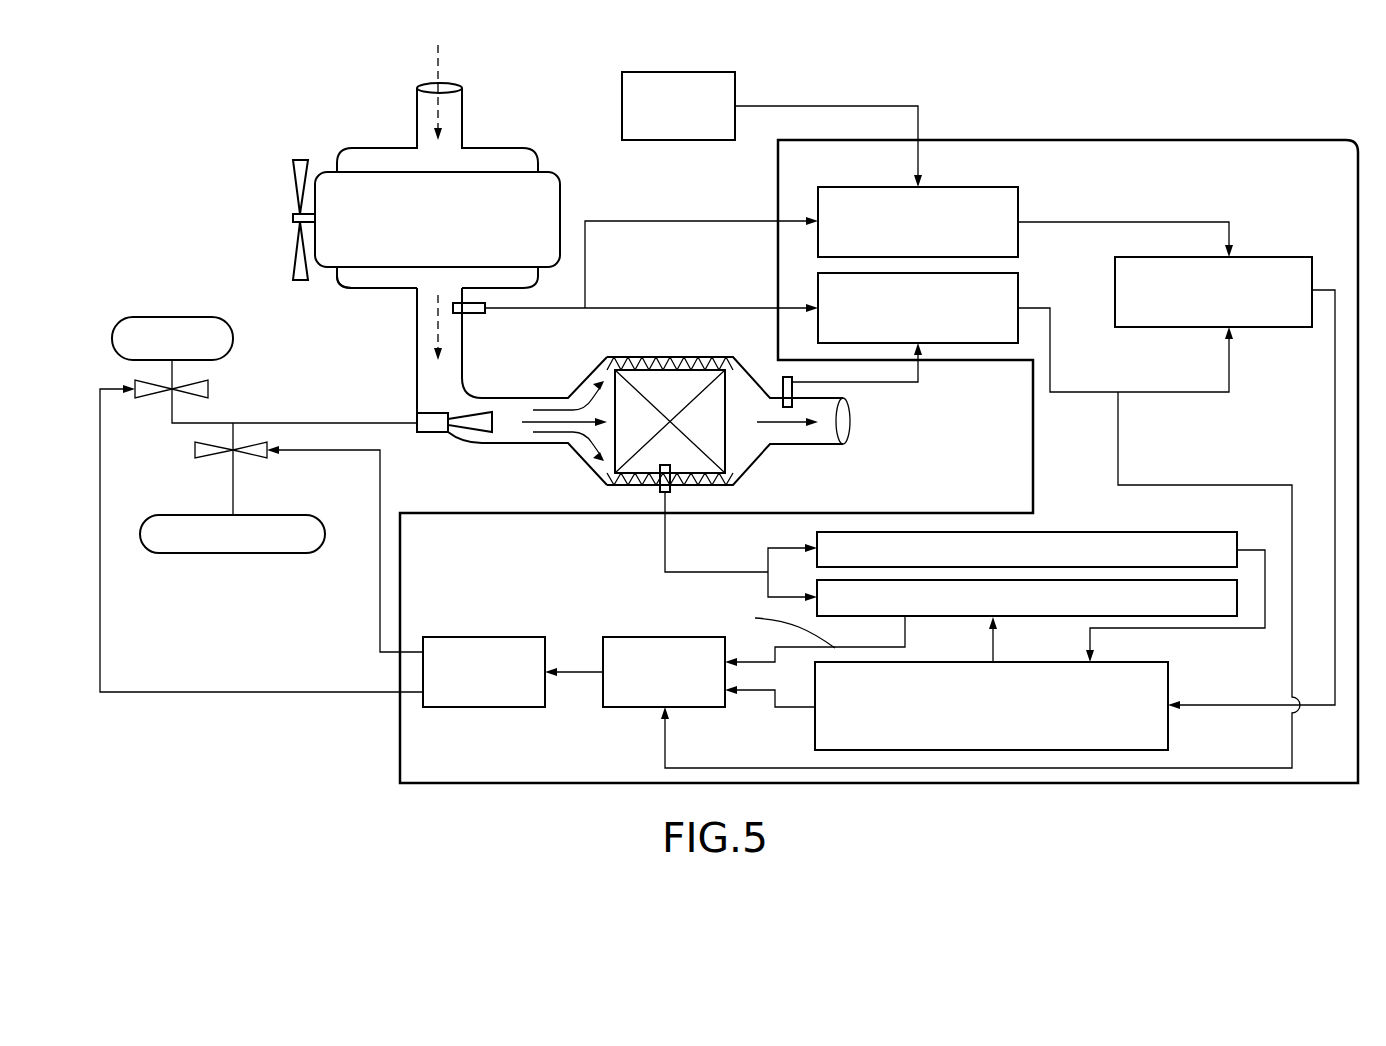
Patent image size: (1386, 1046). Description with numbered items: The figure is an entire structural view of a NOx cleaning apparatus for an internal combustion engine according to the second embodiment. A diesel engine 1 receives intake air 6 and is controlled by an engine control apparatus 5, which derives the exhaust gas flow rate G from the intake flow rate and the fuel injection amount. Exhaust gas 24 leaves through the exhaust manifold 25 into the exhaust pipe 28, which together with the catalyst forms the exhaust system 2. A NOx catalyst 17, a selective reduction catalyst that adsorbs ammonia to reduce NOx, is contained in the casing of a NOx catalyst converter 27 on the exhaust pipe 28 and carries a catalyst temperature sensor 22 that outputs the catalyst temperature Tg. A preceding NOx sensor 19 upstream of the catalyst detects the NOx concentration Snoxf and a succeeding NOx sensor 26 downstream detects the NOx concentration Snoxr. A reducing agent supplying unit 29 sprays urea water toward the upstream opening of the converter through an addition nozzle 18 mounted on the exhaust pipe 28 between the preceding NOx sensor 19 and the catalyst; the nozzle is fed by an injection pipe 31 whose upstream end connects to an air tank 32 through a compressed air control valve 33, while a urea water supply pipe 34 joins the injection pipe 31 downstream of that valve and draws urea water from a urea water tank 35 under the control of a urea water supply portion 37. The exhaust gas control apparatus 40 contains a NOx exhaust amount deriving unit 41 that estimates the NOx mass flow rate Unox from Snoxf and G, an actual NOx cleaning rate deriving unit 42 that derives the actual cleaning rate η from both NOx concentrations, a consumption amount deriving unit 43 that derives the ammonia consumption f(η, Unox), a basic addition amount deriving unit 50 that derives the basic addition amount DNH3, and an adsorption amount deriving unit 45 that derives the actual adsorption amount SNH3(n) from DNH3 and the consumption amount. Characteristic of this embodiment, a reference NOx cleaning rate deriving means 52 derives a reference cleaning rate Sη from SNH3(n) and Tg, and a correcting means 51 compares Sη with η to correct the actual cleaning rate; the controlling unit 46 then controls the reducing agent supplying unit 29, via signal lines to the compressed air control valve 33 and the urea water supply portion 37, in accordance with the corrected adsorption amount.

The diesel engine 1 is at (347, 143).
The exhaust system 2 is at (514, 385).
The engine control apparatus 5 is at (677, 140).
The intake air 6 is at (435, 62).
The NOx catalyst 17 is at (690, 380).
The addition nozzle 18 is at (444, 432).
The preceding NOx sensor 19 is at (468, 313).
The catalyst temperature sensor 22 is at (672, 486).
The exhaust gas 24 is at (435, 298).
The exhaust manifold 25 is at (362, 288).
The succeeding NOx sensor 26 is at (782, 390).
The NOx catalyst converter 27 is at (588, 358).
The exhaust pipe 28 is at (510, 443).
The reducing agent supplying unit 29 is at (362, 408).
The injection pipe 31 is at (307, 422).
The air tank 32 is at (178, 317).
The compressed air control valve 33 is at (210, 389).
The urea water supply pipe 34 is at (230, 437).
The urea water tank 35 is at (250, 553).
The urea water supply portion 37 is at (255, 458).
The exhaust gas control apparatus 40 is at (400, 748).
The NOx exhaust amount deriving unit 41 is at (875, 187).
The actual NOx cleaning rate deriving unit 42 is at (1018, 280).
The consumption amount deriving unit 43 is at (1258, 257).
The adsorption amount deriving unit 45 is at (1168, 735).
The controlling unit 46 is at (500, 637).
The basic addition amount deriving unit 50 is at (1078, 530).
The correcting means 51 is at (620, 707).
The reference NOx cleaning rate deriving means 52 is at (960, 617).